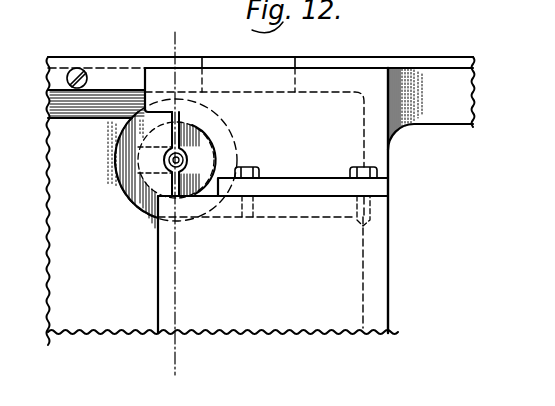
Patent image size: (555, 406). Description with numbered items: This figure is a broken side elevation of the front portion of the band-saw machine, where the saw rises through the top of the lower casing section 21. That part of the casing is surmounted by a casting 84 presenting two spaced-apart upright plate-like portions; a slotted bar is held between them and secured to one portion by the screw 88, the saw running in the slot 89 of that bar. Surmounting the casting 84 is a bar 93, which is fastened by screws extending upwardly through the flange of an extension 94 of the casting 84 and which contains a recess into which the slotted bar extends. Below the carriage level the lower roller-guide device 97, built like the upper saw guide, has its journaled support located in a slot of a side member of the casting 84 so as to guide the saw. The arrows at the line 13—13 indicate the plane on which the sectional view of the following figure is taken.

The section line 13— 13 is at (169, 34).
The lower casing section 21 is at (390, 268).
The casting 84 is at (317, 184).
The screw 88 is at (80, 70).
The slot 89 is at (219, 59).
The bar 93 is at (424, 58).
The extension of the casting 94 is at (448, 110).
The lower saw-guiding device 97 is at (132, 182).